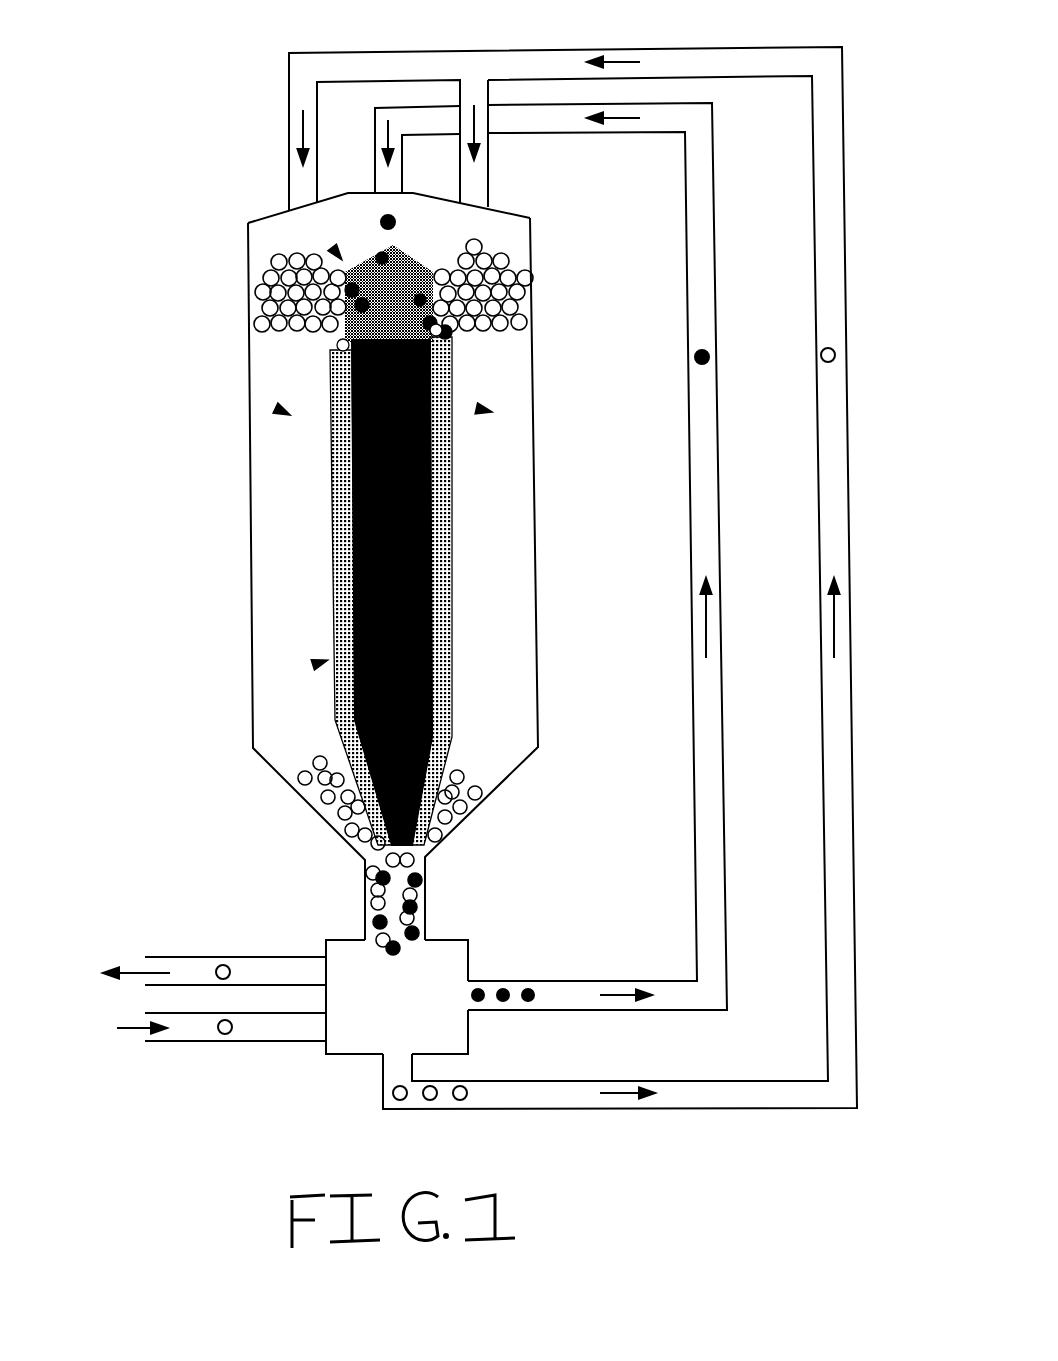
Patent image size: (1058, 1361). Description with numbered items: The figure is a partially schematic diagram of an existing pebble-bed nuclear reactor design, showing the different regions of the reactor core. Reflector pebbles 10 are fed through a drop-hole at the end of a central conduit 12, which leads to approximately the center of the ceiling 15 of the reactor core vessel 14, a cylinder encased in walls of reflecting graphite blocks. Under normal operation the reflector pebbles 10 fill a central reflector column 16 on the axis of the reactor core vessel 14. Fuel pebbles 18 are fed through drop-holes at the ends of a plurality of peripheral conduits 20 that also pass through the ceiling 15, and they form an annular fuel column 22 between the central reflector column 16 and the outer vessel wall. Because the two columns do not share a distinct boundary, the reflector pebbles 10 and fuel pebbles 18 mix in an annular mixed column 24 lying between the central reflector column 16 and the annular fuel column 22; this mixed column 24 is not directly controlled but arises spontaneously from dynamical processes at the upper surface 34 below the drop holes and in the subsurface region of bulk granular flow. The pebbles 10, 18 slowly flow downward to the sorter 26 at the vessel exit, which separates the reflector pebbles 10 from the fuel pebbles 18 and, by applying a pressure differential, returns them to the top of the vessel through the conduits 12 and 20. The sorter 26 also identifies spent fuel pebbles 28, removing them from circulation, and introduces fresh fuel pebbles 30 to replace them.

The reflector pebbles 10 is at (698, 354).
The central conduit 12 is at (375, 118).
The reactor core vessel 14 is at (250, 492).
The ceiling 15 is at (273, 216).
The central reflector column 16 is at (387, 538).
The fuel pebbles 18 is at (824, 350).
The peripheral conduits 20 is at (289, 89).
The annular fuel column 22 is at (478, 409).
The annular mixed column 24 is at (445, 658).
The sorter 26 is at (412, 1024).
The spent fuel pebbles 28 is at (223, 964).
The fresh fuel pebbles 30 is at (230, 1034).
The upper surface 34 is at (333, 249).